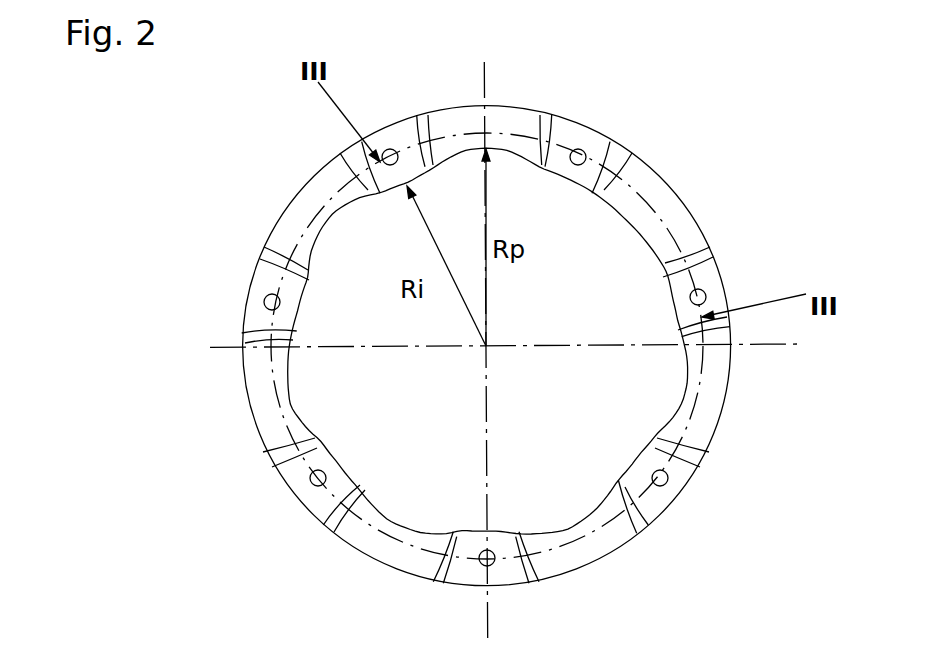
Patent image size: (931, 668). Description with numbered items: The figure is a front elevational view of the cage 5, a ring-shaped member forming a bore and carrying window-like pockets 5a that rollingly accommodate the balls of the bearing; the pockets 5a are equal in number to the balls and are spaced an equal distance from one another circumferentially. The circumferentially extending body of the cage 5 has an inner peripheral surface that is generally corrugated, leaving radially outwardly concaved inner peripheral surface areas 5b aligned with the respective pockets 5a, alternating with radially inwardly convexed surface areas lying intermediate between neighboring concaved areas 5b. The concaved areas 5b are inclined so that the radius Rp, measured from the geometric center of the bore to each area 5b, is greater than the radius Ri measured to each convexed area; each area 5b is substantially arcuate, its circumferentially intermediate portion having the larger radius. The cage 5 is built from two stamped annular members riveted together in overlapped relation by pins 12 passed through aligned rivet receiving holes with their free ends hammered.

The cage 5 is at (650, 195).
The window-like pockets 5a is at (305, 208).
The radially outwardly concaved inner peripheral surface areas 5b is at (294, 407).
The pins 12 is at (264, 302).